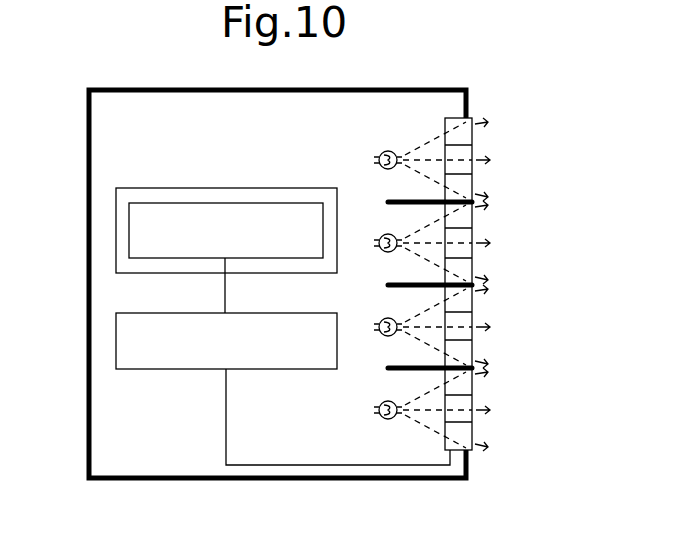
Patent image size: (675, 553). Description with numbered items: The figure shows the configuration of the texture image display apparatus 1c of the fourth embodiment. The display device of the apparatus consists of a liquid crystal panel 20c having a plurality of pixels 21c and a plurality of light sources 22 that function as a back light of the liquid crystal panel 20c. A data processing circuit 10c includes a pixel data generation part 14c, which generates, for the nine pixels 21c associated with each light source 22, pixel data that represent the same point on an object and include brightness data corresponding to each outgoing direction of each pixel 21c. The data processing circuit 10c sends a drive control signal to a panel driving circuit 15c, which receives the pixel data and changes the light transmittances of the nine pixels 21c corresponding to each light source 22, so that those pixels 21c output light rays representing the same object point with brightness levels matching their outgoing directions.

The texture image display apparatus 1c is at (115, 78).
The data processing circuit 10c is at (116, 217).
The pixel data generation part 14c is at (129, 245).
The panel driving circuit 15c is at (116, 342).
The liquid crystal panel 20c is at (472, 452).
The pixel 21c is at (471, 119).
The light source 22 is at (377, 151).